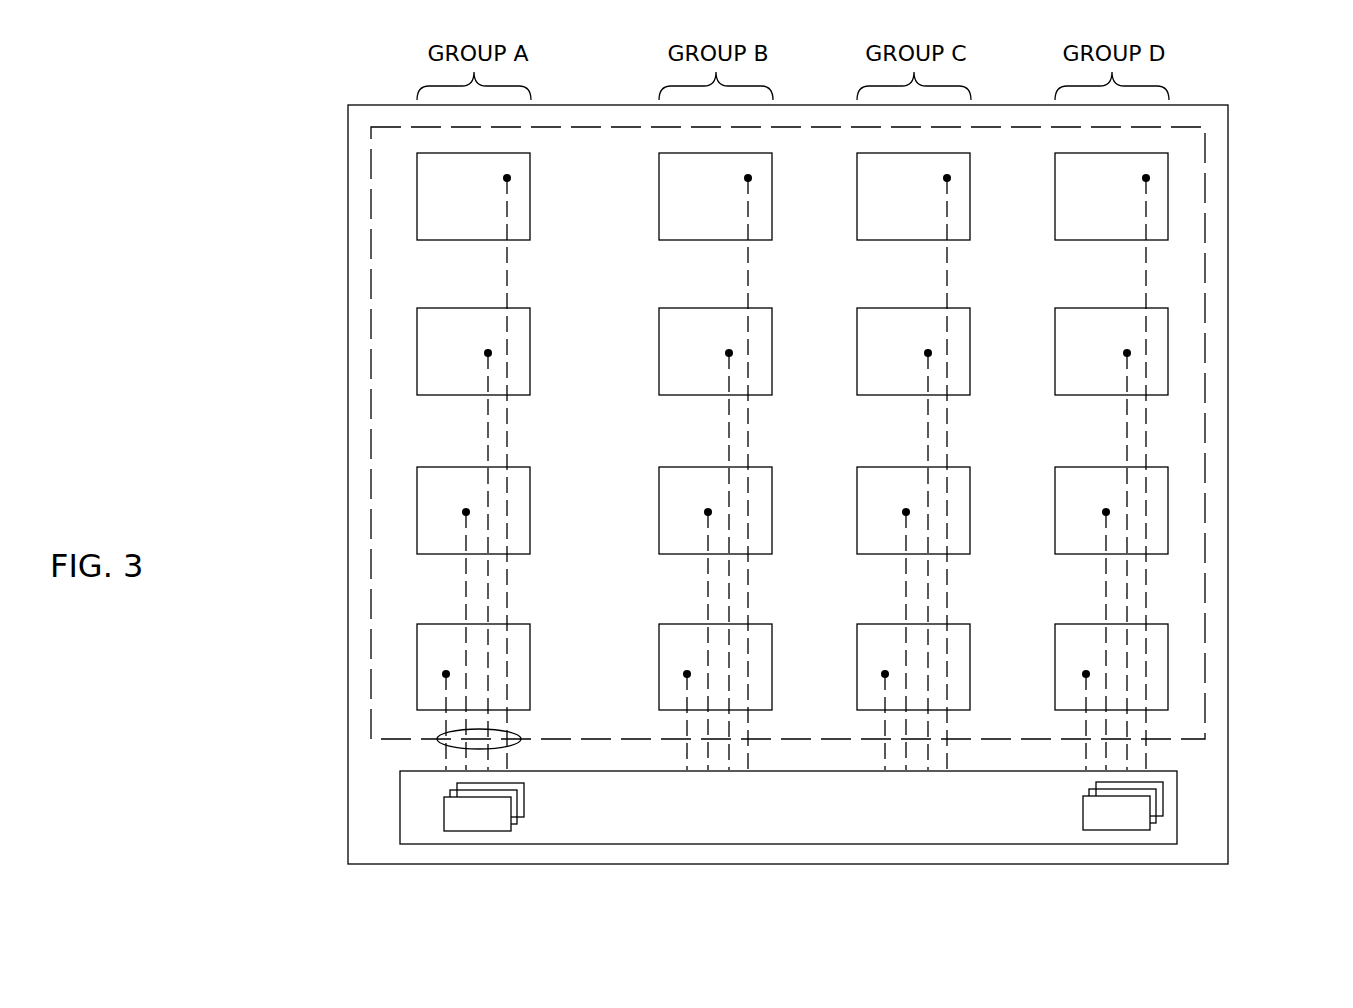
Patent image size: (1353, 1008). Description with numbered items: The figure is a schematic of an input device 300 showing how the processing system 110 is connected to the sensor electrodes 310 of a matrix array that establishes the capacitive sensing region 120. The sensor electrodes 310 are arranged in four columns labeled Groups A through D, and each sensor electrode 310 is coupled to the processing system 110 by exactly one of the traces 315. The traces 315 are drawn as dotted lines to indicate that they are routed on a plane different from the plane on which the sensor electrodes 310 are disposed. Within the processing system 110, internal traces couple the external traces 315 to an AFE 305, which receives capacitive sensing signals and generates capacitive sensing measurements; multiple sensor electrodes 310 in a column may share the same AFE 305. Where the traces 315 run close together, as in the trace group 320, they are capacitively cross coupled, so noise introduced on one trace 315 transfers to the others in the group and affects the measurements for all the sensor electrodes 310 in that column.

The input device 300 is at (1228, 168).
The sensing region 120 is at (1205, 322).
The processing system 110 is at (1177, 793).
The sensor electrode 310 is at (417, 628).
The trace 315 is at (446, 722).
The trace group 320 is at (437, 748).
The AFE 305 is at (511, 810).